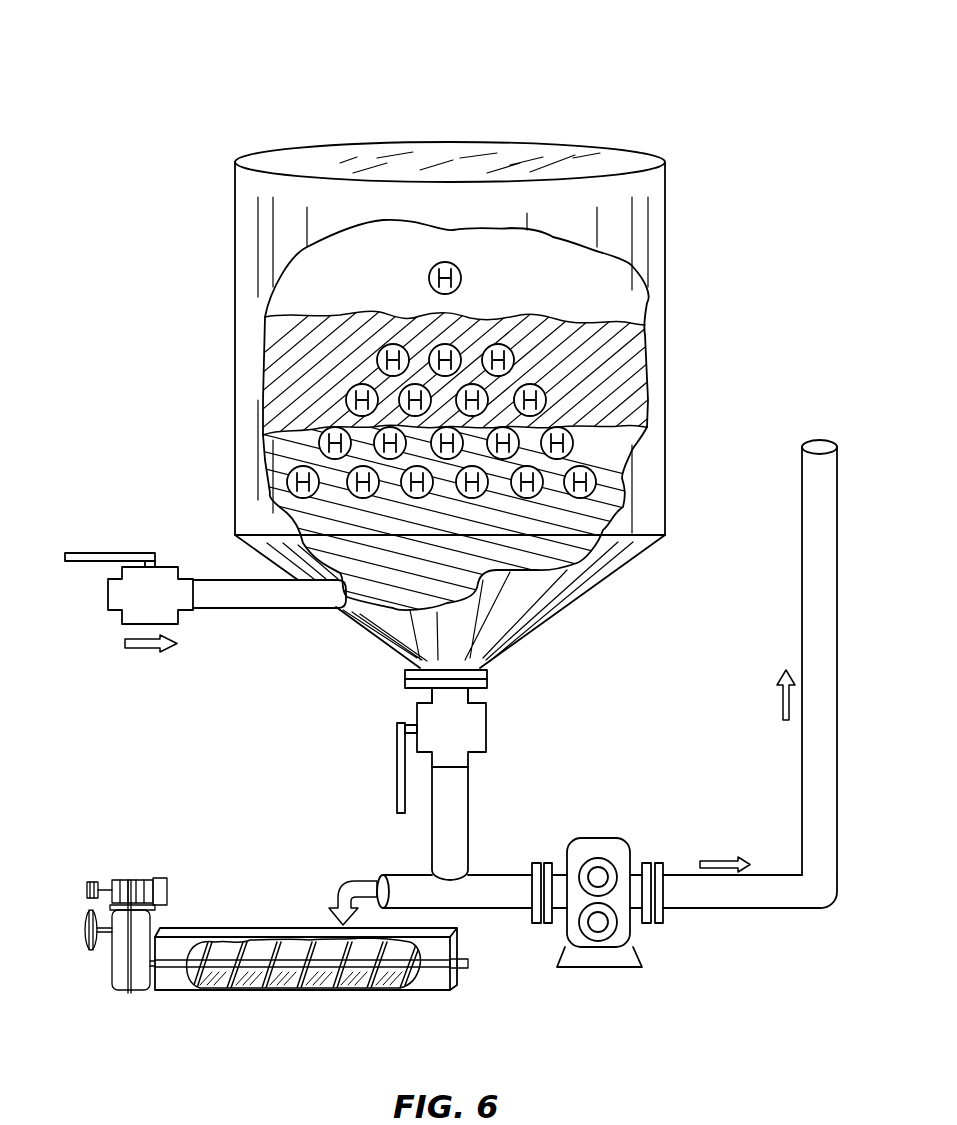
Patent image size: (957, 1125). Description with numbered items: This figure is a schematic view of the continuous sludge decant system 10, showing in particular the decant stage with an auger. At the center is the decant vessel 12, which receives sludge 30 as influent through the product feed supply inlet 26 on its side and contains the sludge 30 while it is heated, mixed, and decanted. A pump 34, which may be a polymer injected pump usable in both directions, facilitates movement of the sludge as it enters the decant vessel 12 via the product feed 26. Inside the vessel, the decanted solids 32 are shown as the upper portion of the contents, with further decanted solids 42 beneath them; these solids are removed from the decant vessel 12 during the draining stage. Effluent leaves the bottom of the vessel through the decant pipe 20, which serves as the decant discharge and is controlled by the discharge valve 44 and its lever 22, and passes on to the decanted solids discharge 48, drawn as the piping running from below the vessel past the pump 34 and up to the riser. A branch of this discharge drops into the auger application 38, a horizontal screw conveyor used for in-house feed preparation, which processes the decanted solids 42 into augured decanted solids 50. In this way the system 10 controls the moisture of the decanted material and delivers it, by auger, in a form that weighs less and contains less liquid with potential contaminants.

The continuous sludge decant system 10 is at (208, 80).
The decant vessel 12 is at (243, 200).
The decant pipe 20 is at (460, 843).
The lever 22 is at (398, 798).
The product feed supply inlet 26 is at (227, 596).
The sludge 30 is at (92, 597).
The decanted solids 32 is at (619, 376).
The pump 34 is at (598, 852).
The auger application 38 is at (262, 950).
The decanted solids 42 is at (577, 539).
The discharge valve 44 is at (477, 740).
The decanted solids discharge 48 is at (405, 882).
The augured decanted solids 50 is at (270, 990).